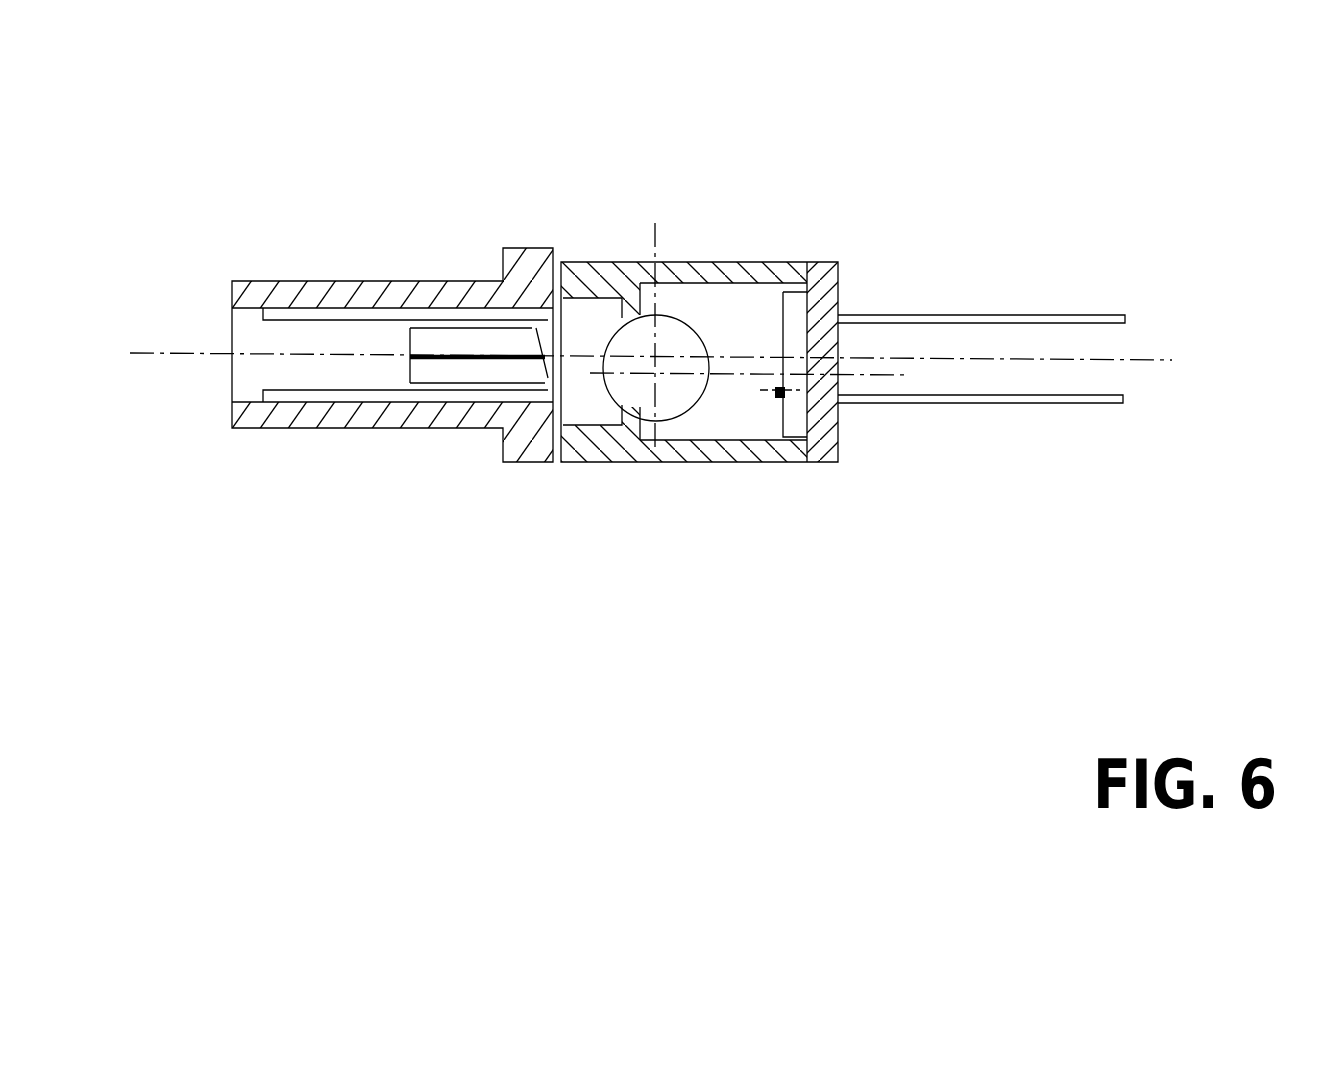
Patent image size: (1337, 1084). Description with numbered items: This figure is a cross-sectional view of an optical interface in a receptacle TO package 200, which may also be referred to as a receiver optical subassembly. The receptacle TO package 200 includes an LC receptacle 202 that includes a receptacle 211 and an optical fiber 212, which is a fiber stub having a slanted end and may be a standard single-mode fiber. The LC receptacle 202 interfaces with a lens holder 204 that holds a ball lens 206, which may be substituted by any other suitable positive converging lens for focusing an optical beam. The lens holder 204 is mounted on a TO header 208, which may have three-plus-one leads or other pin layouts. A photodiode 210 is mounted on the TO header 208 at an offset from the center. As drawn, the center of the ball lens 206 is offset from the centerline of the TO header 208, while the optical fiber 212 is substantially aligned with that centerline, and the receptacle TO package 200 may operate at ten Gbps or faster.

The receptacle TO package 200 is at (614, 808).
The LC receptacle 202 is at (372, 456).
The lens holder 204 is at (685, 490).
The ball lens 206 is at (709, 297).
The TO header 208 is at (871, 274).
The photodiode 210 is at (810, 421).
The receptacle 211 is at (455, 415).
The optical fiber 212 is at (438, 333).